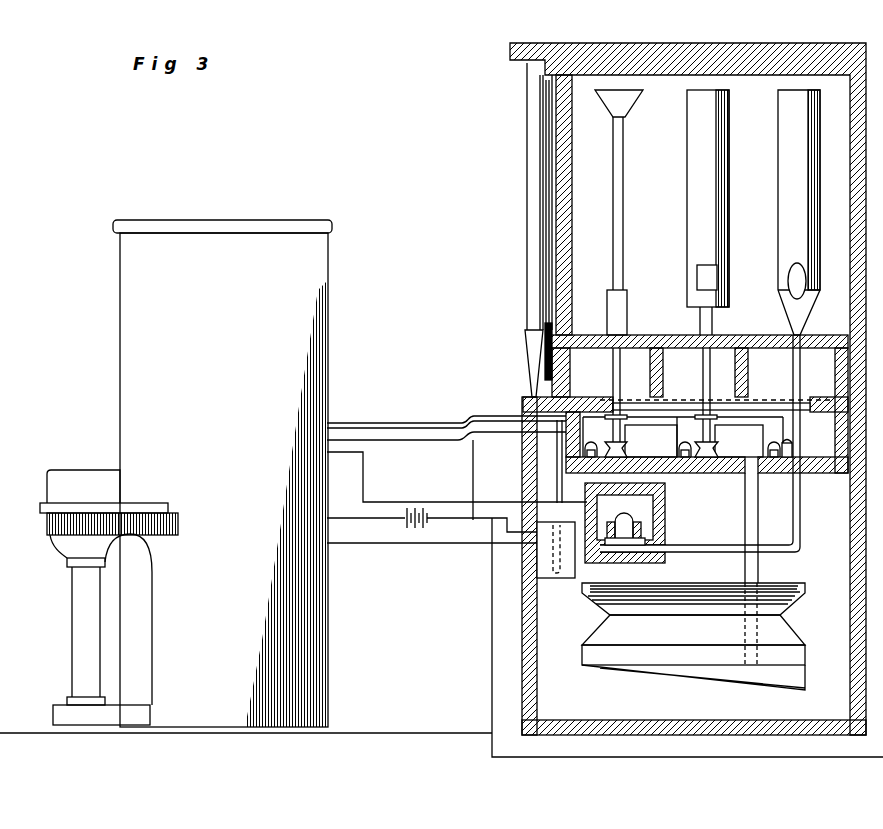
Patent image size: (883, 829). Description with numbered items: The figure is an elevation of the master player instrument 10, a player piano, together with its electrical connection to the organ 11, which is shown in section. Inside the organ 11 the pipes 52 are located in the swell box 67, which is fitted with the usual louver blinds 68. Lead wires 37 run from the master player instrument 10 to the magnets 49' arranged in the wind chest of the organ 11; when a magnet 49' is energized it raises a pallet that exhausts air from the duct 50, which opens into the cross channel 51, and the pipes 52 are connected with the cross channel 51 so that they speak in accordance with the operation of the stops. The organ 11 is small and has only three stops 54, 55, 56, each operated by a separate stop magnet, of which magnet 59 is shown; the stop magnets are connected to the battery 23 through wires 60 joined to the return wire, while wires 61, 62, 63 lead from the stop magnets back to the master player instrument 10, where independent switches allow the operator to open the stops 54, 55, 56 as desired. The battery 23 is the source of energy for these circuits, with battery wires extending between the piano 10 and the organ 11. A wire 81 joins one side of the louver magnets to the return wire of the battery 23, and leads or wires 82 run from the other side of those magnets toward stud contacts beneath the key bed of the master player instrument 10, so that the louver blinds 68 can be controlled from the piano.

The master player instrument 10 is at (222, 473).
The organ 11 is at (687, 44).
The source of energy 23 is at (403, 525).
The lead wires 37 is at (395, 502).
The magnets 49' is at (649, 523).
The duct 50 is at (801, 540).
The cross channel 51 is at (750, 406).
The pipes 52 is at (628, 305).
The stop 54 is at (797, 423).
The stop 55 is at (712, 420).
The stop 56 is at (620, 420).
The magnet 59 is at (459, 518).
The wires 60 is at (472, 468).
The wire 61 is at (356, 423).
The wire 62 is at (388, 428).
The wire 63 is at (430, 440).
The swell box 67 is at (725, 212).
The louver blinds 68 is at (552, 213).
The wire 81 is at (513, 518).
The leads or wires 82 is at (376, 545).